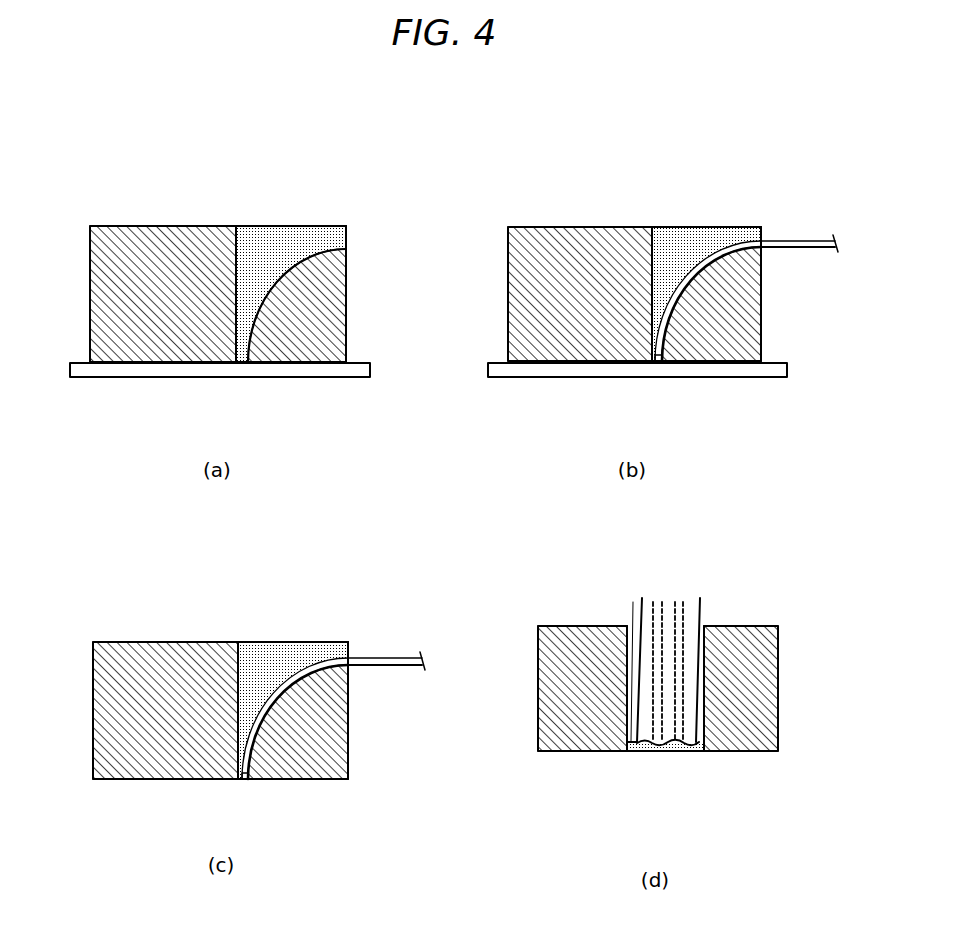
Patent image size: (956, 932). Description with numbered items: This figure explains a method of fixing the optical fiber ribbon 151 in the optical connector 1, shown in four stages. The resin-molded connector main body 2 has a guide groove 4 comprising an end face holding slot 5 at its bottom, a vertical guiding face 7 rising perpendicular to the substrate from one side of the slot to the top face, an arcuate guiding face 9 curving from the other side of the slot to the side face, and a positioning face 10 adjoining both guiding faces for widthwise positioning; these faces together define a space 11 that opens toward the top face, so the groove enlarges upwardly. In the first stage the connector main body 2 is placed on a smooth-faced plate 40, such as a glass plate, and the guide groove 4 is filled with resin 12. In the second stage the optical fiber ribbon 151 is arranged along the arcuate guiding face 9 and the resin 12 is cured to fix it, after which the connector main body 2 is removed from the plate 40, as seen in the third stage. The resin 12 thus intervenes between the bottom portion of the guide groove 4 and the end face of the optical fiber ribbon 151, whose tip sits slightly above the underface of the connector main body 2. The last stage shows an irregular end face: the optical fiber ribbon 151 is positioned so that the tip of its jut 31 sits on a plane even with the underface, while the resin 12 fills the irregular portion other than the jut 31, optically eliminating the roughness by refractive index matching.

The optical connector 1 is at (122, 209).
The connector main body 2 is at (92, 293).
The guide groove 4 is at (346, 228).
The end face holding slot 5 is at (247, 362).
The vertical guiding face 7 is at (237, 227).
The arcuate guiding face 9 is at (313, 250).
The positioning face 10 is at (288, 230).
The space 11 is at (246, 279).
The resin 12 is at (278, 237).
The jut 31 is at (657, 748).
The plate 40 is at (152, 370).
The optical fiber ribbon 151 is at (775, 253).